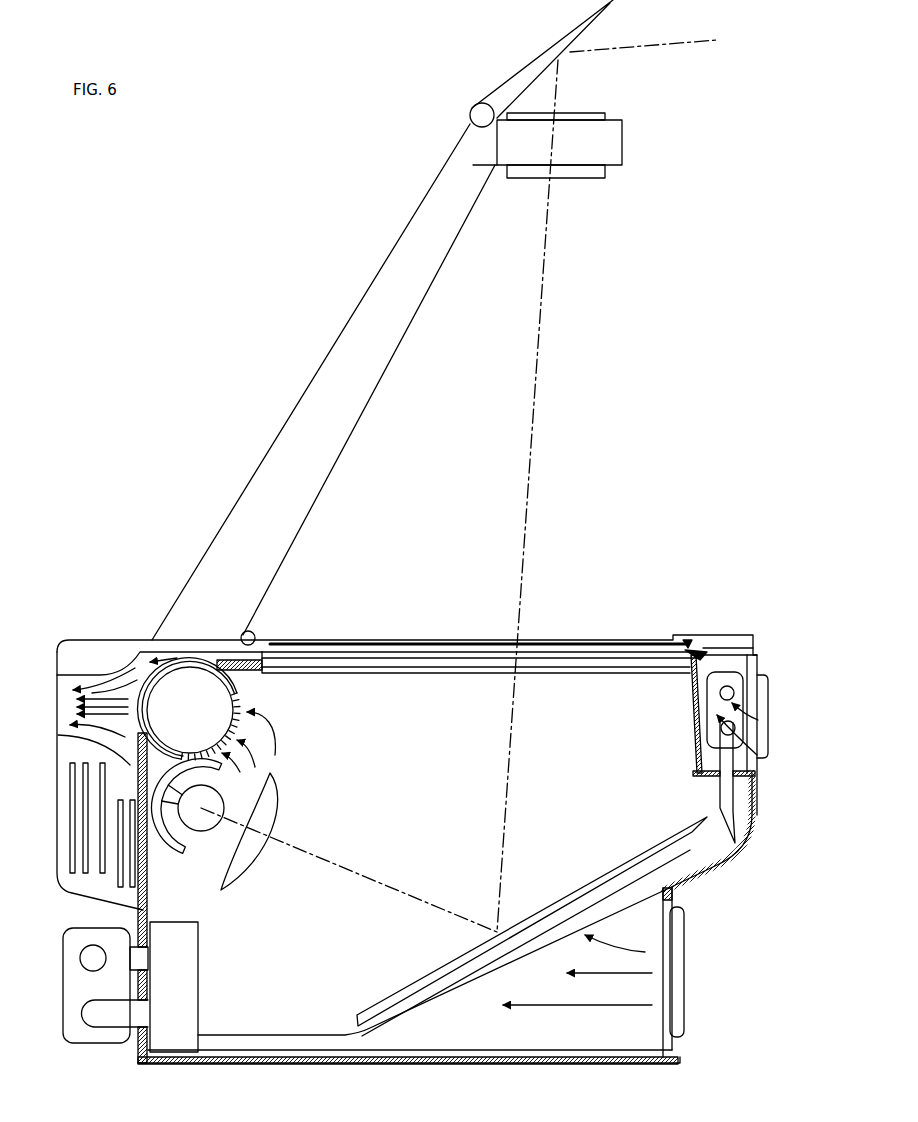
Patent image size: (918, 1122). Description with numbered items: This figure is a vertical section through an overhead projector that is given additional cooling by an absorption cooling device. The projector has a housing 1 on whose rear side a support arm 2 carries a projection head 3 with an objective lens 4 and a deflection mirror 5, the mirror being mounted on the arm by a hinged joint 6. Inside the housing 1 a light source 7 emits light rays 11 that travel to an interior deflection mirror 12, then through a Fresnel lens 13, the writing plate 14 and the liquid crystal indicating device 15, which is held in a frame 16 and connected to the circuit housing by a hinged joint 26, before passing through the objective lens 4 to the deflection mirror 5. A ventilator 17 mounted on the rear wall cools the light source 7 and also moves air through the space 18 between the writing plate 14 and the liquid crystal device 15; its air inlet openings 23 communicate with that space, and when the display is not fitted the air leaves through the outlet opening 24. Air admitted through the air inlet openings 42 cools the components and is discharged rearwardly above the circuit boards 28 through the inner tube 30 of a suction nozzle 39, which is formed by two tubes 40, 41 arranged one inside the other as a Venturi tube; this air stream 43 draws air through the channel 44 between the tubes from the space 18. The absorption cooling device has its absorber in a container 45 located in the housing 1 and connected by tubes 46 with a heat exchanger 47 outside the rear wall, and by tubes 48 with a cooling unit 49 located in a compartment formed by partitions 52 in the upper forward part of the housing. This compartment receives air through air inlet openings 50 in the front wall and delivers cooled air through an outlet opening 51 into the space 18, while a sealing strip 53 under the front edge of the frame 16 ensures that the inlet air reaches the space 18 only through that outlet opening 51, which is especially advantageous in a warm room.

The housing 1 is at (442, 1025).
The support arm 2 is at (297, 440).
The projection head 3 is at (605, 148).
The objective lens 4 is at (562, 170).
The deflection mirror 5 is at (527, 75).
The hinged joint 6 is at (480, 113).
The light source 7 is at (293, 730).
The light rays 11 is at (528, 550).
The deflection mirror 12 is at (492, 940).
The Fresnel lens 13 is at (397, 672).
The writing plate 14 is at (433, 663).
The liquid crystal indicating device 15 is at (468, 642).
The frame 16 is at (686, 638).
The ventilator 17 is at (207, 700).
The space 18 is at (576, 656).
The air inlet openings 23 is at (247, 705).
The outlet openings 24 is at (140, 712).
The hinged joint 26 is at (253, 633).
The circuit boards 28 is at (125, 862).
The inner tube 30 is at (138, 915).
The suction nozzle 39 is at (83, 697).
The tube 40 is at (135, 683).
The tube 41 is at (67, 675).
The air inlet openings 42 is at (672, 968).
The air stream 43 is at (110, 707).
The channel 44 is at (100, 677).
The container 45 is at (177, 1018).
The tubes 46 is at (138, 957).
The heat exchanger 47 is at (75, 1030).
The tubes 48 is at (298, 1037).
The cooling unit 49 is at (730, 678).
The air inlet openings 50 is at (760, 678).
The outlet opening 51 is at (707, 660).
The partitions 52 is at (700, 782).
The sealing strip 53 is at (745, 645).